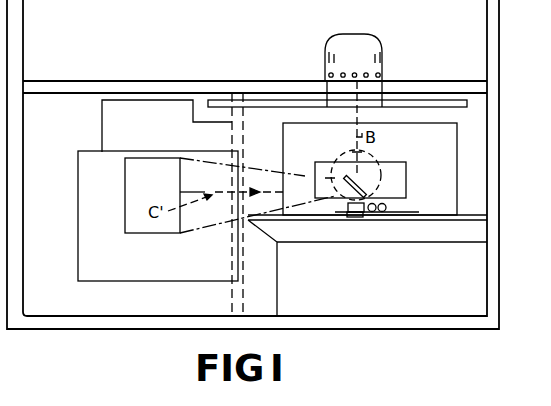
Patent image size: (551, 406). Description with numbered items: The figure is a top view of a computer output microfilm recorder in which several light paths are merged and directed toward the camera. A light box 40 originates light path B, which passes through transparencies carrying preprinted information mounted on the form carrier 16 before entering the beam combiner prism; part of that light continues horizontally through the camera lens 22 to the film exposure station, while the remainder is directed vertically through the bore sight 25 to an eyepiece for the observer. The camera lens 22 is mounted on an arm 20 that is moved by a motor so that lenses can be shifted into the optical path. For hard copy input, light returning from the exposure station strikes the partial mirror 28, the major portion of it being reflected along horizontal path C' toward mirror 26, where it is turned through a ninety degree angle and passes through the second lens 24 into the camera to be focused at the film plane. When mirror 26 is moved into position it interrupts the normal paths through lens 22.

The form carrier 16 is at (468, 105).
The arm 20 is at (418, 212).
The camera lens 22 is at (385, 211).
The second lens 24 is at (338, 196).
The bore sight 25 is at (371, 152).
The mirror 26 is at (351, 170).
The partial mirror 28 is at (83, 200).
The light box 40 is at (377, 48).